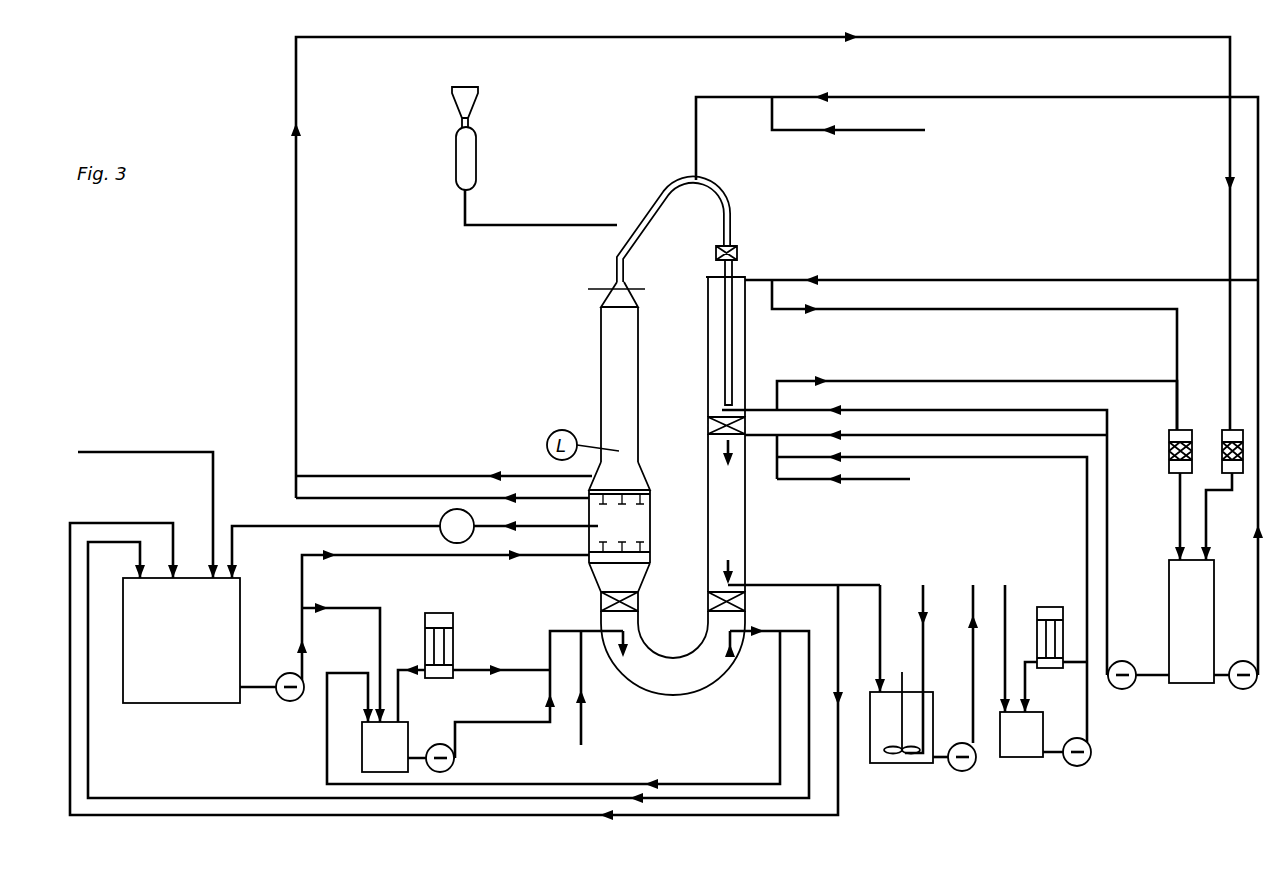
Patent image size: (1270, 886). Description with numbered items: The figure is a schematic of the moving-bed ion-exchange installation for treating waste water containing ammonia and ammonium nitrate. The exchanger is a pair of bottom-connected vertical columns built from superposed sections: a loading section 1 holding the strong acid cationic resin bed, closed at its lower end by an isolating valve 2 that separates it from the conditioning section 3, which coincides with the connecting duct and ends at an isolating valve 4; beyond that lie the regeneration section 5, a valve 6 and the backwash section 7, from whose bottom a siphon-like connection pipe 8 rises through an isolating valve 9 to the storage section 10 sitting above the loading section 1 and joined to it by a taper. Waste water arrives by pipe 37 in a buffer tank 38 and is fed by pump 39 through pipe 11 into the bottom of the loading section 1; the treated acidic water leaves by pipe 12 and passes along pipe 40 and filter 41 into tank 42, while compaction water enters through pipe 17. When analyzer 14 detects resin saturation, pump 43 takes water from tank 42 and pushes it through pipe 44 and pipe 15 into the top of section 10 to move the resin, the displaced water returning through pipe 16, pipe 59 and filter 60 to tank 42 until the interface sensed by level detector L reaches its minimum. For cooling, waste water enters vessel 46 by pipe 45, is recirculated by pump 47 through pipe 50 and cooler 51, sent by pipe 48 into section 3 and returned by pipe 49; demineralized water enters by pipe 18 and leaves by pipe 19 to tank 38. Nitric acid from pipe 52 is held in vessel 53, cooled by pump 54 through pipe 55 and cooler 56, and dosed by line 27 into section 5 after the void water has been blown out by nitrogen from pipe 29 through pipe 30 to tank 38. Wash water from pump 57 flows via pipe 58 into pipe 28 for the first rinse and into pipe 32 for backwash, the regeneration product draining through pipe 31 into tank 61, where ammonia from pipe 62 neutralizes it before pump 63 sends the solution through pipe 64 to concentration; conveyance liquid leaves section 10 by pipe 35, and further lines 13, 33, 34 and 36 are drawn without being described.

The loading section 1 is at (636, 528).
The isolating valve 2 is at (633, 604).
The conditioning section 3 is at (658, 682).
The isolating valve 4 is at (712, 606).
The regeneration section 5 is at (730, 541).
The valve 6 is at (735, 425).
The backwash section 7 is at (733, 374).
The siphon-like connection pipe 8 is at (650, 222).
The isolating valve 9 is at (738, 252).
The storage section 10 is at (628, 385).
The pipe 11 is at (480, 556).
The pipe 12 is at (327, 502).
The line 13 is at (535, 526).
The analyzer 14 is at (457, 526).
The pipe 15 is at (1065, 97).
The pipe 16 is at (950, 309).
The pipe 17 is at (907, 131).
The pipe 18 is at (583, 742).
The pipe 19 is at (808, 757).
The line 27 is at (935, 458).
The pipe 28 is at (924, 436).
The pipe 29 is at (884, 484).
The pipe 30 is at (836, 638).
The pipe 31 is at (876, 645).
The pipe 32 is at (918, 410).
The line 33 is at (944, 280).
The line 34 is at (975, 381).
The pipe 35 is at (410, 476).
The line 36 is at (540, 227).
The pipe 37 is at (132, 452).
The buffer tank 38 is at (230, 646).
The pump 39 is at (290, 695).
The collecting pipe 40 is at (1040, 37).
The filter 41 is at (1225, 450).
The tank 42 is at (1181, 629).
The pump 43 is at (1246, 688).
The pipe 44 is at (1257, 510).
The pipe 45 is at (384, 618).
The vessel 46 is at (400, 736).
The pump 47 is at (450, 760).
The pipe 48 is at (526, 725).
The pipe 49 is at (779, 722).
The pipe 50 is at (515, 671).
The cooler 51 is at (450, 652).
The pipe 52 is at (1003, 655).
The vessel 53 is at (1022, 749).
The pump 54 is at (1080, 760).
The pipe 55 is at (1082, 666).
The cooler 56 is at (1050, 612).
The pump 57 is at (1126, 686).
The pipe 58 is at (1108, 520).
The pipe 59 is at (1185, 400).
The filter 60 is at (1168, 455).
The tank 61 is at (885, 766).
The pipe 62 is at (921, 652).
The pump 63 is at (962, 763).
The pipe 64 is at (470, 153).